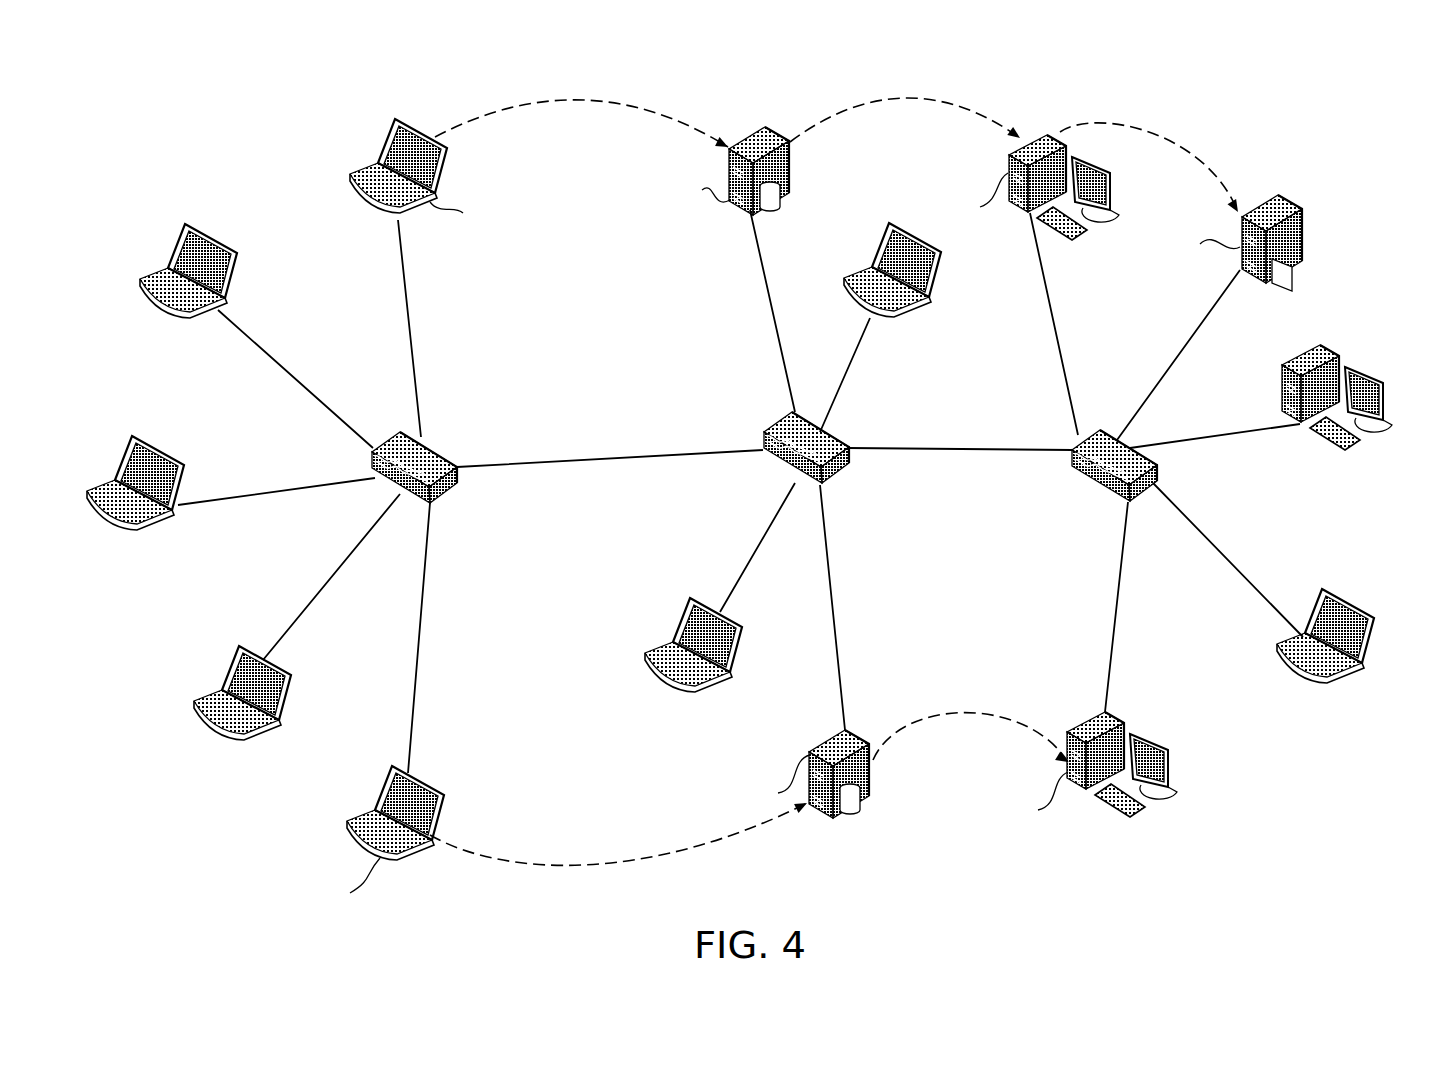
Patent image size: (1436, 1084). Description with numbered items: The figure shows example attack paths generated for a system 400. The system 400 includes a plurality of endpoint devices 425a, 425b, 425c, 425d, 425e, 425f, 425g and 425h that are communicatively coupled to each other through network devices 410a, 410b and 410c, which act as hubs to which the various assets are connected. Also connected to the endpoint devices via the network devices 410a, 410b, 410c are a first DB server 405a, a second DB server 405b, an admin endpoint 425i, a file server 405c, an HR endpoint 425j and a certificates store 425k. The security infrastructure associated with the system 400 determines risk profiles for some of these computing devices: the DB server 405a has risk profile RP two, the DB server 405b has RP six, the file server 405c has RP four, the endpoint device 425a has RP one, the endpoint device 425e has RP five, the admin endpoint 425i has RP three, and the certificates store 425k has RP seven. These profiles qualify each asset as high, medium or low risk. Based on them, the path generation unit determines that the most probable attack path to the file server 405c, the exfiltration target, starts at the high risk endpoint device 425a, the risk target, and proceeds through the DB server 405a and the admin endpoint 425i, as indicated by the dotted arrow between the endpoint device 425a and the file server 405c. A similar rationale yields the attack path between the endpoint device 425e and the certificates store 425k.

The system 400 is at (175, 97).
The endpoint device 425a is at (377, 162).
The endpoint device 425b is at (213, 238).
The endpoint device 425c is at (180, 465).
The endpoint device 425d is at (243, 650).
The endpoint device 425e is at (373, 812).
The endpoint device 425f is at (660, 647).
The endpoint device 425g is at (910, 233).
The endpoint device 425h is at (1335, 595).
The admin endpoint 425i is at (1055, 132).
The HR endpoint 425j is at (1322, 344).
The certificates store 425k is at (1127, 724).
The DB server 405a is at (762, 132).
The DB server 405b is at (835, 813).
The file server 405c is at (1297, 200).
The network device 410a is at (430, 452).
The network device 410b is at (842, 441).
The network device 410c is at (1098, 492).